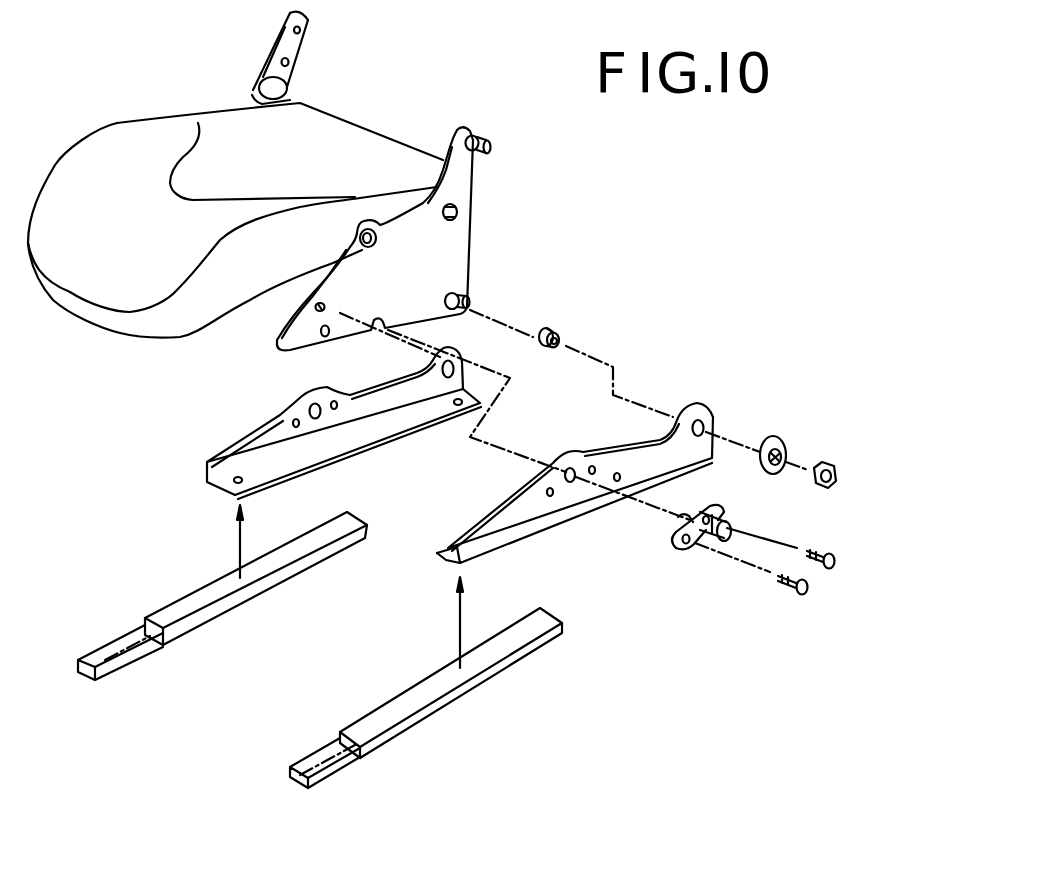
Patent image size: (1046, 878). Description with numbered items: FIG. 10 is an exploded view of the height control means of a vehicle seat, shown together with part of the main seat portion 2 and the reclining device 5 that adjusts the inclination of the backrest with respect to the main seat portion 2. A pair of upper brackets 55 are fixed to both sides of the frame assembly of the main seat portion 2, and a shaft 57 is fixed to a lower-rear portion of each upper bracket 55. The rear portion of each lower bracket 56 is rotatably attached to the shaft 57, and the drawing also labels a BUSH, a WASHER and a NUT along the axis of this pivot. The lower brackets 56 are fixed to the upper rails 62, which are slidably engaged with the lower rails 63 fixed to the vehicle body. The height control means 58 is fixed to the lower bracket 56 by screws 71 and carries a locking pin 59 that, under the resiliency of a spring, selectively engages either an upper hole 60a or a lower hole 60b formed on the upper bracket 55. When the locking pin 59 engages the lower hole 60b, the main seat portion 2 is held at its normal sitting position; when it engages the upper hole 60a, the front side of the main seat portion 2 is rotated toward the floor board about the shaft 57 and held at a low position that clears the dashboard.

The main seat portion 2 is at (117, 133).
The reclining device 5 is at (268, 54).
The upper bracket 55 is at (453, 237).
The lower bracket 56 is at (380, 430).
The shaft 57 is at (457, 293).
The height control means 58 is at (727, 508).
The locking pin 59 is at (683, 518).
The upper hole 60a is at (338, 306).
The lower hole 60b is at (322, 335).
The upper rail 62 is at (313, 570).
The lower rail 63 is at (135, 660).
The screws 71 is at (815, 589).
The bush BUSH is at (563, 334).
The washer WASHER is at (778, 445).
The nut NUT is at (838, 468).